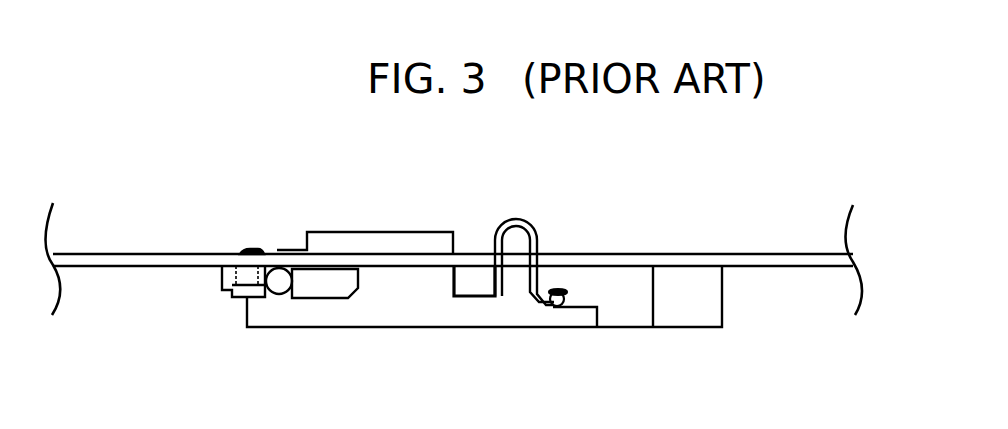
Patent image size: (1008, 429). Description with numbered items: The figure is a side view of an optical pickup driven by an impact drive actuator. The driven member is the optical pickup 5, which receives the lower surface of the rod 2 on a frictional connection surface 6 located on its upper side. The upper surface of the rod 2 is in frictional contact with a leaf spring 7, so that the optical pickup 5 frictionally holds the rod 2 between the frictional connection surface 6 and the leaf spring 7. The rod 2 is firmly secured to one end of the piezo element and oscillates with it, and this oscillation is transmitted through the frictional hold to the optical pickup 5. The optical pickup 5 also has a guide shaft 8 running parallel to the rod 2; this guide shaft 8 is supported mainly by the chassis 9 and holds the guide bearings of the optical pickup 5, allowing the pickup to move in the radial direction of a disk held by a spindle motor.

The chassis 9 is at (156, 258).
The guide shaft 8 is at (279, 281).
The leaf spring 7 is at (543, 298).
The optical pickup 5 is at (415, 312).
The rod 2 is at (555, 306).
The frictional connection surface 6 is at (585, 315).